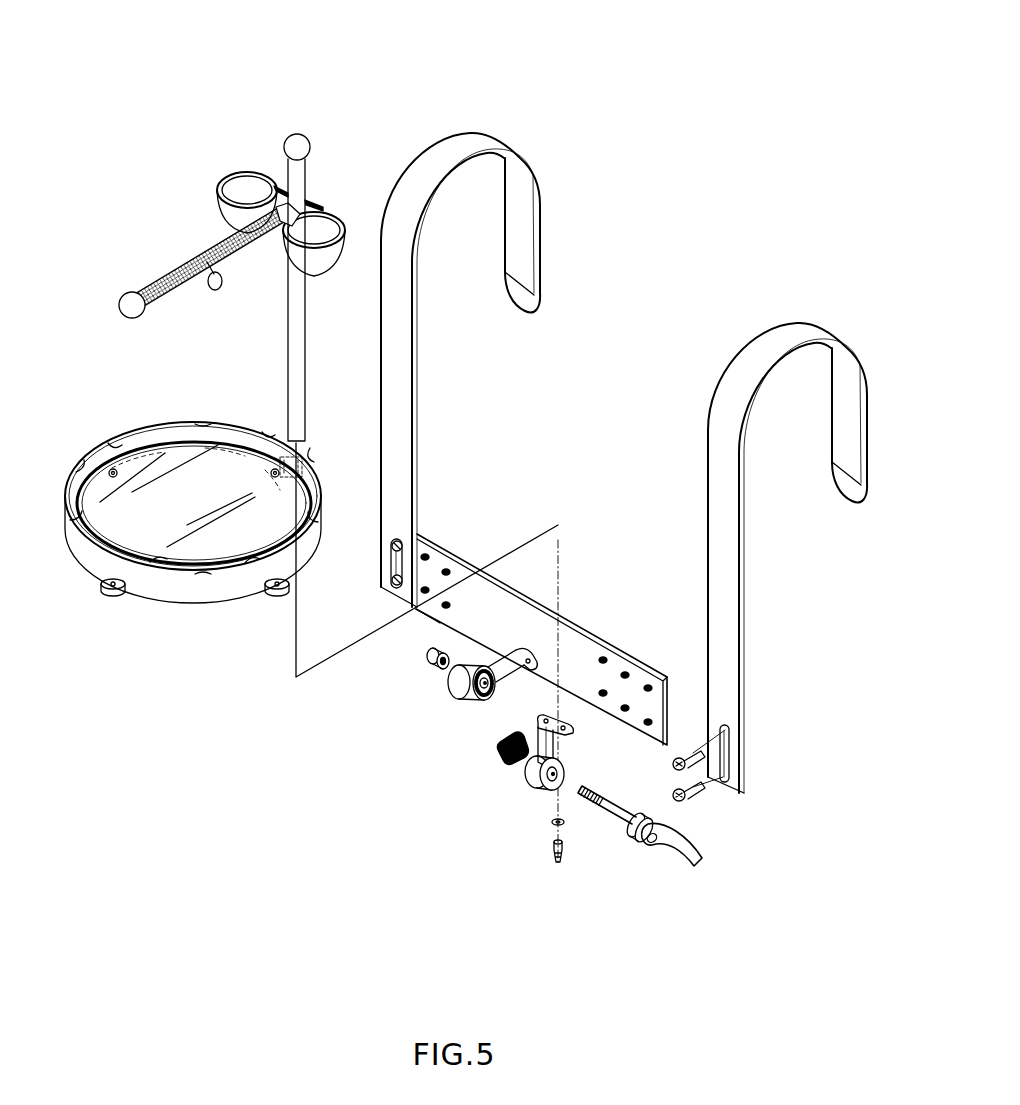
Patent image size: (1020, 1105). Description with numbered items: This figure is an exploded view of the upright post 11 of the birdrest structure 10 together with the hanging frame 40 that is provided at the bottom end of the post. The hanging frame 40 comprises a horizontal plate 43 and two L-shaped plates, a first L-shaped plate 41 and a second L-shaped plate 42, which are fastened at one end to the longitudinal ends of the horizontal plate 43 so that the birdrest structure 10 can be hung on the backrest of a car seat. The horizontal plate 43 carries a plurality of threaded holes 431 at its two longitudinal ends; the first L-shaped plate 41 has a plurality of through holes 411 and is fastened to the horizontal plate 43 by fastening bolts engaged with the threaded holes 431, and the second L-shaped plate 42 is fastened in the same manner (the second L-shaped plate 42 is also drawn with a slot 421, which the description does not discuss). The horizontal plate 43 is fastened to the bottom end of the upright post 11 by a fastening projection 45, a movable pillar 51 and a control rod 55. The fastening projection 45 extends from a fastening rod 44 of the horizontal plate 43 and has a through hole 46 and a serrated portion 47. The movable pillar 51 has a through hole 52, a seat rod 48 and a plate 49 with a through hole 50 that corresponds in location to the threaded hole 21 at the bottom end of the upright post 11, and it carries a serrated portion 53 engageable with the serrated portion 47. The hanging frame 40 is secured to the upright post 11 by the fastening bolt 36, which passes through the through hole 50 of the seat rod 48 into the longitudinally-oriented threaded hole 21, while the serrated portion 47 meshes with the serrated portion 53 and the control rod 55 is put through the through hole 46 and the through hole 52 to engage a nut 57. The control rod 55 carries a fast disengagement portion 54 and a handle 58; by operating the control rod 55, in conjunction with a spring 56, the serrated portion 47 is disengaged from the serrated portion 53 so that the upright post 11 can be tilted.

The birdrest structure 10 is at (148, 240).
The upright post 11 is at (298, 360).
The threaded hole 21 is at (305, 475).
The hanging frame 40 is at (655, 188).
The first L-shaped plate 41 is at (453, 148).
The through holes 411 is at (392, 565).
The second L-shaped plate 42 is at (720, 285).
The slot of second hook 421 is at (727, 752).
The horizontal plate 43 is at (507, 605).
The threaded holes 431 is at (425, 557).
The fastening rod 44 is at (423, 638).
The fastening projection 45 is at (462, 694).
The through hole 46 is at (500, 740).
The serrated portion 47 is at (472, 703).
The seat rod 48 is at (548, 742).
The plate 49 is at (568, 726).
The through hole 50 is at (572, 732).
The movable pillar 51 is at (538, 790).
The through hole 52 is at (565, 790).
The serrated portion 53 is at (530, 782).
The fast disengagement portion 54 is at (648, 822).
The control rod 55 is at (617, 810).
The spring 56 is at (500, 758).
The nut 57 is at (432, 668).
The handle 58 is at (690, 845).
The fastening bolt 36 is at (557, 865).